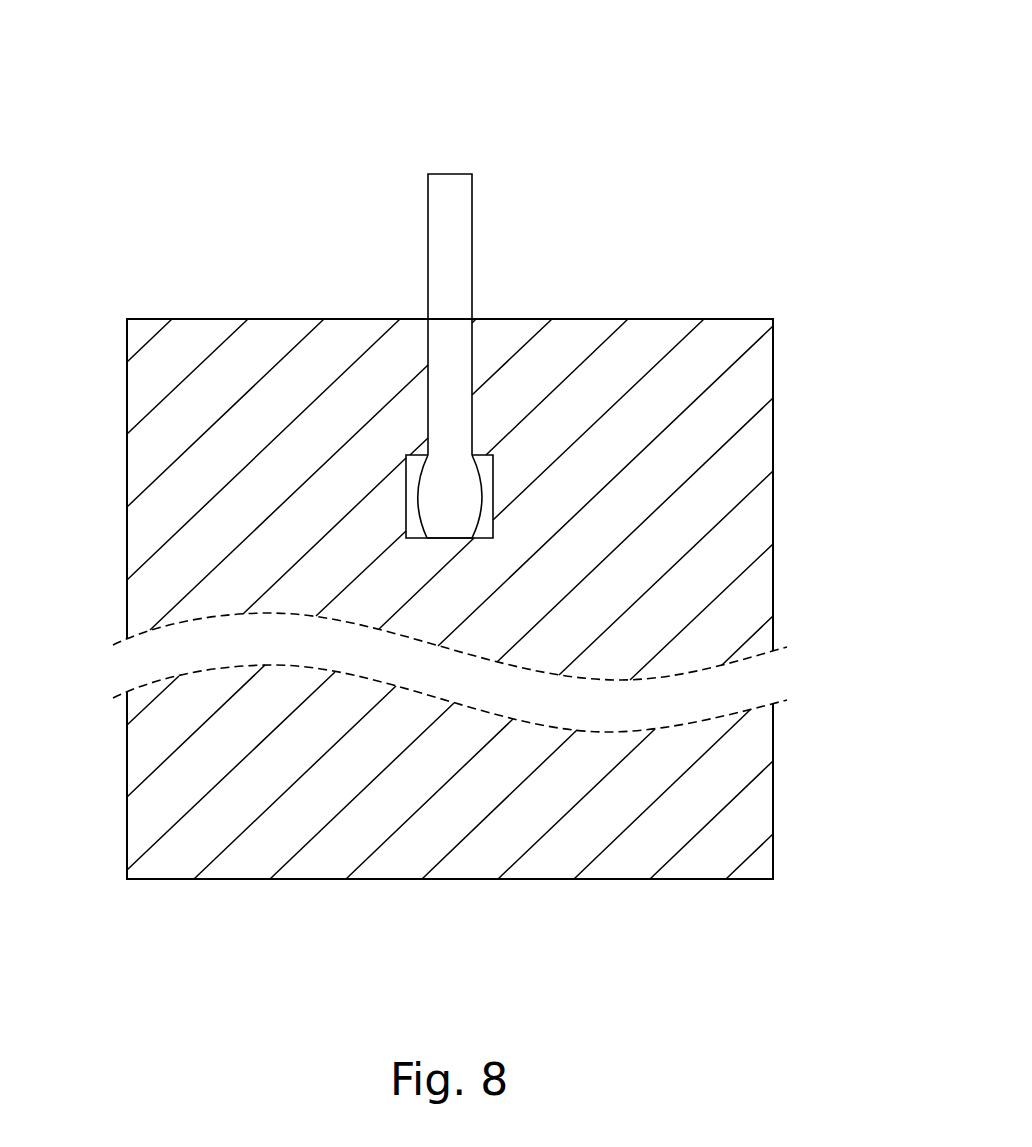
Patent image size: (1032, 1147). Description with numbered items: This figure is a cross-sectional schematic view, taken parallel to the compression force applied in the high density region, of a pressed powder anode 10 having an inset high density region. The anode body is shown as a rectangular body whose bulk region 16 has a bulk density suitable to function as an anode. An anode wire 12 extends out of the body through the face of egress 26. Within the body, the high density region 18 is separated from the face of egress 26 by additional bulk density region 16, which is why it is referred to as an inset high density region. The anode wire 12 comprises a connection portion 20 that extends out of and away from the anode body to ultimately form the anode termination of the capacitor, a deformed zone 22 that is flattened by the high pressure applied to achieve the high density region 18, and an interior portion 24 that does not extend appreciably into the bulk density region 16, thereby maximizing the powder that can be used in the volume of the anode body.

The pressed powder anode 10 is at (475, 445).
The anode wire 12 is at (337, 358).
The bulk region 16 is at (623, 367).
The high density region 18 is at (484, 473).
The connection portion 20 is at (457, 252).
The deformed zone 22 is at (455, 498).
The internal portion 24 is at (450, 538).
The face of egress 26 is at (272, 318).